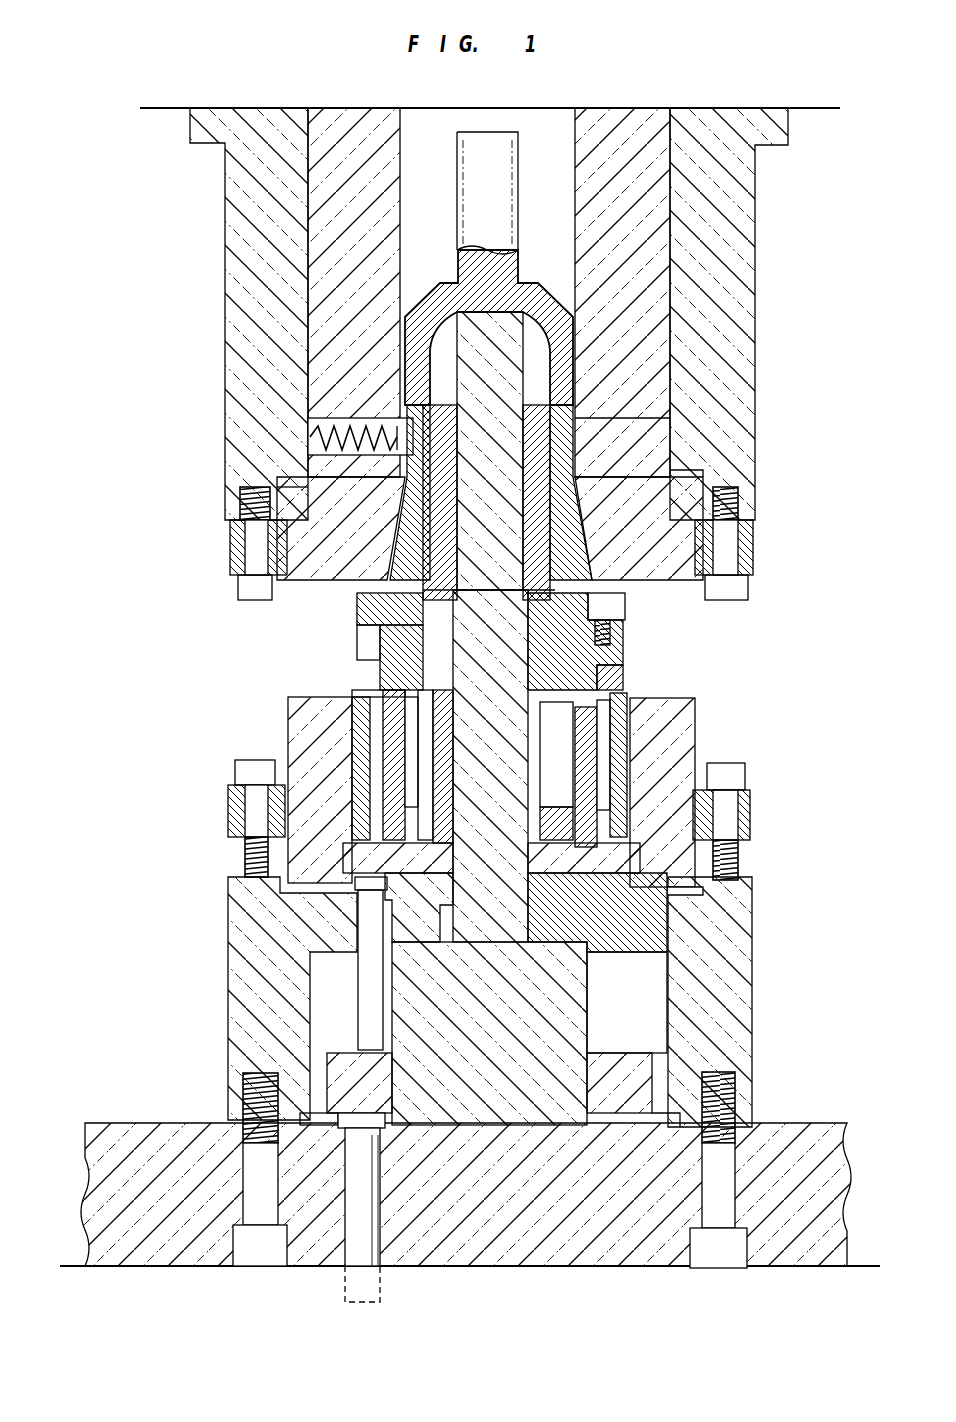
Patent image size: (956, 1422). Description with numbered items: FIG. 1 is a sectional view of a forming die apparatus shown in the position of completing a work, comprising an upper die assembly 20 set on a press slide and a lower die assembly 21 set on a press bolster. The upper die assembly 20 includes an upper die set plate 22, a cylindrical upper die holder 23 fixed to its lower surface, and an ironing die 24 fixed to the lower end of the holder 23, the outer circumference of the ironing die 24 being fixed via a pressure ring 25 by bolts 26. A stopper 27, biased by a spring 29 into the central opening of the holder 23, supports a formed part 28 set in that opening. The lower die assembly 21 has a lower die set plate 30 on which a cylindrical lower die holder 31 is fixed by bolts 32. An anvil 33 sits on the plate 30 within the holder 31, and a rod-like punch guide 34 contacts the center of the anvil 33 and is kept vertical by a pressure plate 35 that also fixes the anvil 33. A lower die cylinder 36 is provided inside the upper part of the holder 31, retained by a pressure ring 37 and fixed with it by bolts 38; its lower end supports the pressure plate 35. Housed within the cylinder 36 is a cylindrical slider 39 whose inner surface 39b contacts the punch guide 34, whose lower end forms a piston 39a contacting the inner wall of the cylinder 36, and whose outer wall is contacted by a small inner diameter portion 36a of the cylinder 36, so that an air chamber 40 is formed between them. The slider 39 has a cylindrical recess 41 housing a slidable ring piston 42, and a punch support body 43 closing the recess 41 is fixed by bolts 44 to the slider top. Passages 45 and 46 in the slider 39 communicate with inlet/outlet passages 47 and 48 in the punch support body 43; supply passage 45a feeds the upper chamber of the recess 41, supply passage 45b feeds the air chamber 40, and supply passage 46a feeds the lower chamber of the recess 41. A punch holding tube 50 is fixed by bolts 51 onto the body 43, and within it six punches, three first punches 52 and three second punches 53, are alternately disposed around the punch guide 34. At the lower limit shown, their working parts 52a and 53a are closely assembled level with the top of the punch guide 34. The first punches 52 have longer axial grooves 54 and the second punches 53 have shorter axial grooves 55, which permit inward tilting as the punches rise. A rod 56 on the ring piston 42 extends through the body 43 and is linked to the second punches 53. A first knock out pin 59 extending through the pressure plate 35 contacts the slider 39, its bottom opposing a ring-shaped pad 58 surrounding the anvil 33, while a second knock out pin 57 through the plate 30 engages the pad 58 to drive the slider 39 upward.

The upper die assembly 20 is at (205, 272).
The lower die assembly 21 is at (205, 1032).
The upper die set plate 22 is at (816, 108).
The upper die holder 23 is at (755, 267).
The ironing die 24 is at (290, 544).
The pressure ring 25 is at (754, 549).
The bolts 26 is at (238, 593).
The stopper 27 is at (350, 418).
The formed part 28 is at (432, 294).
The spring 29 is at (304, 433).
The lower die set plate 30 is at (808, 1108).
The lower die holder 31 is at (750, 962).
The bolts 32 is at (252, 1266).
The anvil 33 is at (580, 1030).
The punch guide 34 is at (560, 392).
The pressure plate 35 is at (314, 914).
The lower die cylinder 36 is at (288, 706).
The small inner diameter portion 36a is at (352, 694).
The pressure ring 37 is at (228, 810).
The bolts 38 is at (244, 758).
The cylindrical slider 39 is at (628, 714).
The piston 39a is at (343, 846).
The inner surface 39b is at (565, 771).
The air chamber 40 is at (695, 807).
The cylindrical recess 41 is at (520, 818).
The ring piston 42 is at (489, 1033).
The punch support body 43 is at (626, 643).
The bolts 44 is at (354, 607).
The passage 45 is at (630, 754).
The supply passage 45a is at (544, 694).
The supply passage 45b is at (622, 876).
The passage 46 is at (354, 781).
The supply passage 46a is at (421, 929).
The inlet/outlet passage 47 is at (626, 674).
The inlet/outlet passage 48 is at (359, 666).
The punch holding tube 50 is at (576, 548).
The bolts 51 is at (624, 608).
The first punches 52 is at (580, 444).
The working parts 52a is at (558, 352).
The second punches 53 is at (427, 477).
The working parts 53a is at (422, 342).
The axial grooves 54 is at (490, 451).
The axial grooves 55 is at (489, 594).
The rod 56 is at (444, 760).
The second knock out pin 57 is at (388, 1252).
The pad 58 is at (392, 1074).
The first knock out pin 59 is at (360, 992).